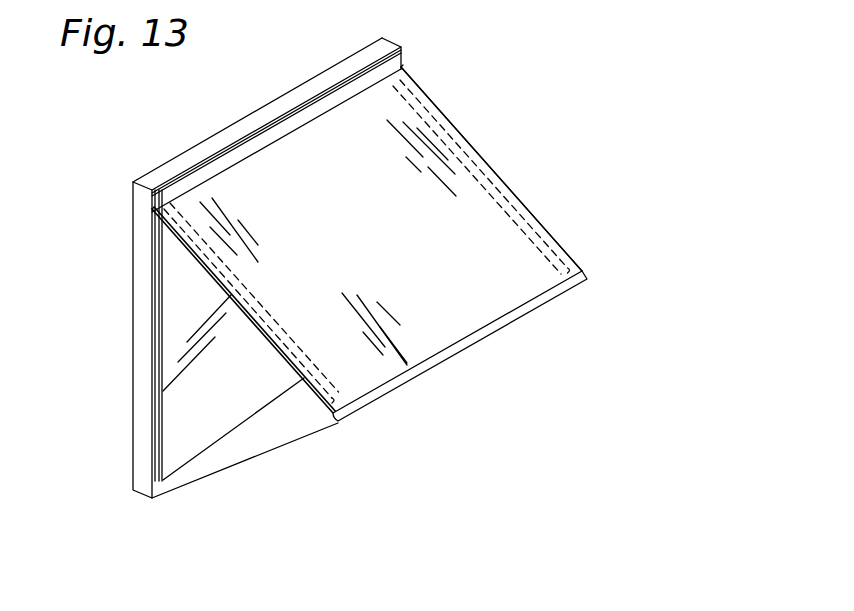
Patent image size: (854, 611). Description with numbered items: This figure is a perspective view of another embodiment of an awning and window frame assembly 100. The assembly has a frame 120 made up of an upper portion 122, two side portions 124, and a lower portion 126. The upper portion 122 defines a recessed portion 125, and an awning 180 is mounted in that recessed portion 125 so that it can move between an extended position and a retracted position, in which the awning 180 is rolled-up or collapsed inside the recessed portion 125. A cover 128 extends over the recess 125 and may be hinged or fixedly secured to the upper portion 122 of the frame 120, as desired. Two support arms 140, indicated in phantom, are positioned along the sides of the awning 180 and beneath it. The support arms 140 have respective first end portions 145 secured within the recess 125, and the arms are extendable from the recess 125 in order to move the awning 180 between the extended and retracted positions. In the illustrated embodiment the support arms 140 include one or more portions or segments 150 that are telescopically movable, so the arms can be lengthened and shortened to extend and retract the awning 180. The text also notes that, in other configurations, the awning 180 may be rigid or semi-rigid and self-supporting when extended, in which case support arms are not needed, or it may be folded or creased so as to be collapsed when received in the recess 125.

The awning and window frame assembly 100 is at (547, 127).
The frame 120 is at (165, 172).
The upper portion 122 is at (261, 115).
The side portions 124 is at (134, 391).
The recessed portion 125 is at (314, 88).
The lower portion 126 is at (262, 428).
The cover 128 is at (392, 62).
The support arms 140 is at (204, 261).
The first end portions 145 is at (195, 259).
The telescopically movable segments 150 is at (505, 183).
The awning 180 is at (470, 305).